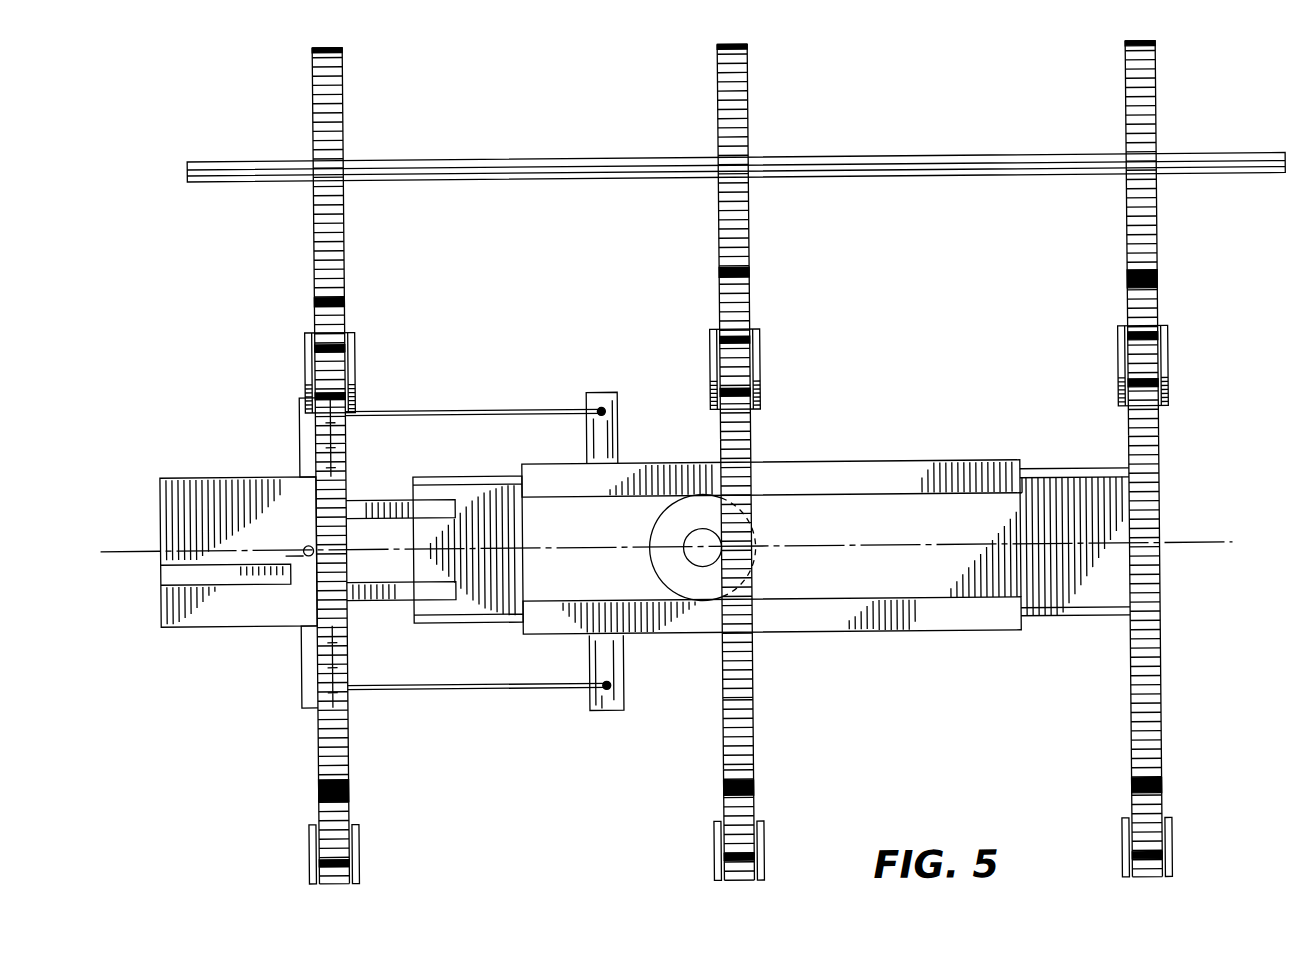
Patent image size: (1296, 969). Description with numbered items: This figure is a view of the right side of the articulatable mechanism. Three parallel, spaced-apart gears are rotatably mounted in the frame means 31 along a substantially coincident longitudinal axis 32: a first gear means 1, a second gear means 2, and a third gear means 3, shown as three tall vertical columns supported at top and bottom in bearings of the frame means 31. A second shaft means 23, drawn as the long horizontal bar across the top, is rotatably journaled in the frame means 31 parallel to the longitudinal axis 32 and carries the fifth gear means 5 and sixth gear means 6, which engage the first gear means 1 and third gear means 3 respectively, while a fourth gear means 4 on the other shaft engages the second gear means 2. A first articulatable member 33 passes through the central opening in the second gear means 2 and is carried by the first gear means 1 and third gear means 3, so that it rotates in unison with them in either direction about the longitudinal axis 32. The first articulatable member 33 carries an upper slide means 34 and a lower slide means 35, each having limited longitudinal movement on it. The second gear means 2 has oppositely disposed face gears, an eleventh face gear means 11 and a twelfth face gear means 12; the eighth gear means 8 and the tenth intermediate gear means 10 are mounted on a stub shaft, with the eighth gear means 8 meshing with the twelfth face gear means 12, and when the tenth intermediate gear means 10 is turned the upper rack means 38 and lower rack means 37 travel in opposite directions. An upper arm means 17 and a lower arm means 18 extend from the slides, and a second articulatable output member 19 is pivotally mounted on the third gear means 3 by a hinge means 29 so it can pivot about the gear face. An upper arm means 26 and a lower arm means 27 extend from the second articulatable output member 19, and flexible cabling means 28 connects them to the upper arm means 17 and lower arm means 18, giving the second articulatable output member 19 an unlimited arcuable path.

The first gear means 1 is at (1158, 718).
The second gear means 2 is at (753, 728).
The third gear means 3 is at (348, 763).
The fourth gear means 4 is at (752, 105).
The fifth gear means 5 is at (1160, 101).
The sixth gear means 6 is at (347, 110).
The eighth gear means 8 is at (703, 560).
The tenth intermediate gear means 10 is at (690, 590).
The eleventh face gear means 11 is at (753, 678).
The twelfth face gear means 12 is at (722, 785).
The upper arm means 17 is at (622, 395).
The lower arm means 18 is at (617, 712).
The second articulatable output member 19 is at (215, 513).
The second shaft means 23 is at (1012, 156).
The upper arm means 26 is at (300, 423).
The lower arm means 27 is at (300, 677).
The flexible cabling means 28 is at (556, 408).
The hinge means 29 is at (287, 553).
The frame means 31 is at (336, 370).
The longitudinal axis 32 is at (142, 552).
The first articulatable member 33 is at (1034, 562).
The upper slide means 34 is at (938, 461).
The lower slide means 35 is at (970, 634).
The lower rack means 37 is at (942, 600).
The upper rack means 38 is at (948, 495).